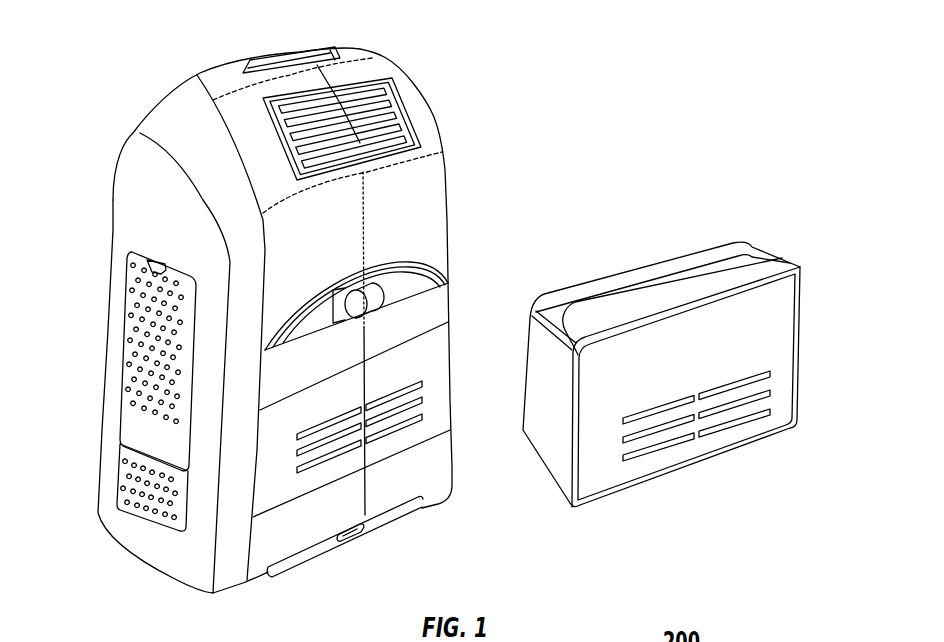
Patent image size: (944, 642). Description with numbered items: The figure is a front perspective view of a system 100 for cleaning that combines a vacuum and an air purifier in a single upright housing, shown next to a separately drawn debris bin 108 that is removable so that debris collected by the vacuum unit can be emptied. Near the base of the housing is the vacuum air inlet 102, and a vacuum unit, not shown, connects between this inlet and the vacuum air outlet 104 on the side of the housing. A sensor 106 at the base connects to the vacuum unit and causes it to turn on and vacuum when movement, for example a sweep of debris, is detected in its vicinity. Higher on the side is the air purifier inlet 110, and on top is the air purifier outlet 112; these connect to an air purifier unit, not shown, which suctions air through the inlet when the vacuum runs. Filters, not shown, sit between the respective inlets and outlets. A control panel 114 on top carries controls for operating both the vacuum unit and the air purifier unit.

The system 100 is at (122, 48).
The vacuum air inlet 102 is at (275, 570).
The vacuum air outlet 104 is at (127, 497).
The sensor 106 is at (367, 530).
The debris bin 108 is at (447, 317).
The air purifier inlet 110 is at (137, 308).
The air purifier outlet 112 is at (413, 92).
The control panel 114 is at (291, 62).